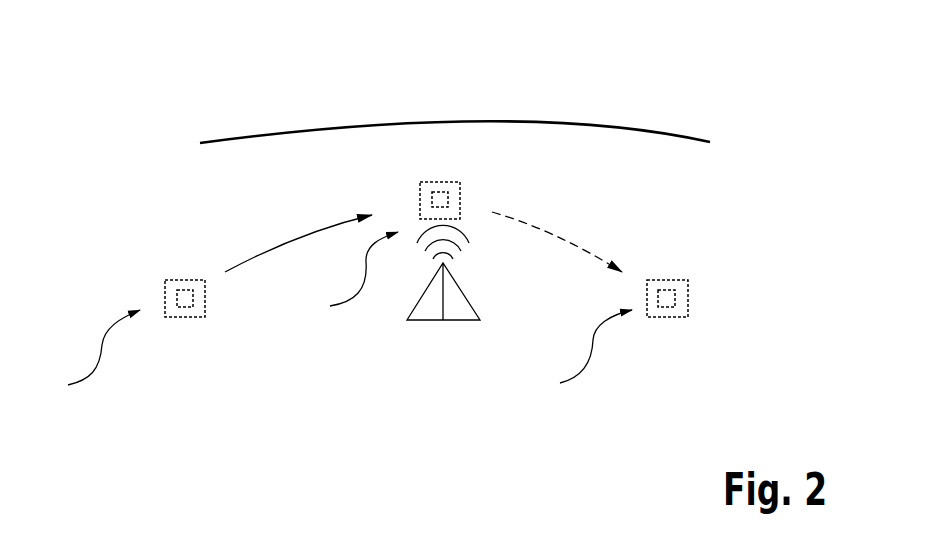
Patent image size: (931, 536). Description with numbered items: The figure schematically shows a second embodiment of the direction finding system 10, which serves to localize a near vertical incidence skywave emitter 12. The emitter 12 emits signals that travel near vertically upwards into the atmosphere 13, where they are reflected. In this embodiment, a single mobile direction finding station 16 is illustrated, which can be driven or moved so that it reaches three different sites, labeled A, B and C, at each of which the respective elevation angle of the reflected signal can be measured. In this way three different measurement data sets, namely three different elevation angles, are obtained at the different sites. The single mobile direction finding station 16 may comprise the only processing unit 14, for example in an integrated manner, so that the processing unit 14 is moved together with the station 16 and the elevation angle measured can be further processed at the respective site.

The direction finding system 10 is at (696, 110).
The near vertical incidence skywave emitter 12 is at (426, 322).
The atmosphere 13 is at (497, 120).
The processing unit 14 is at (185, 307).
The single mobile direction finding station 16 is at (165, 293).